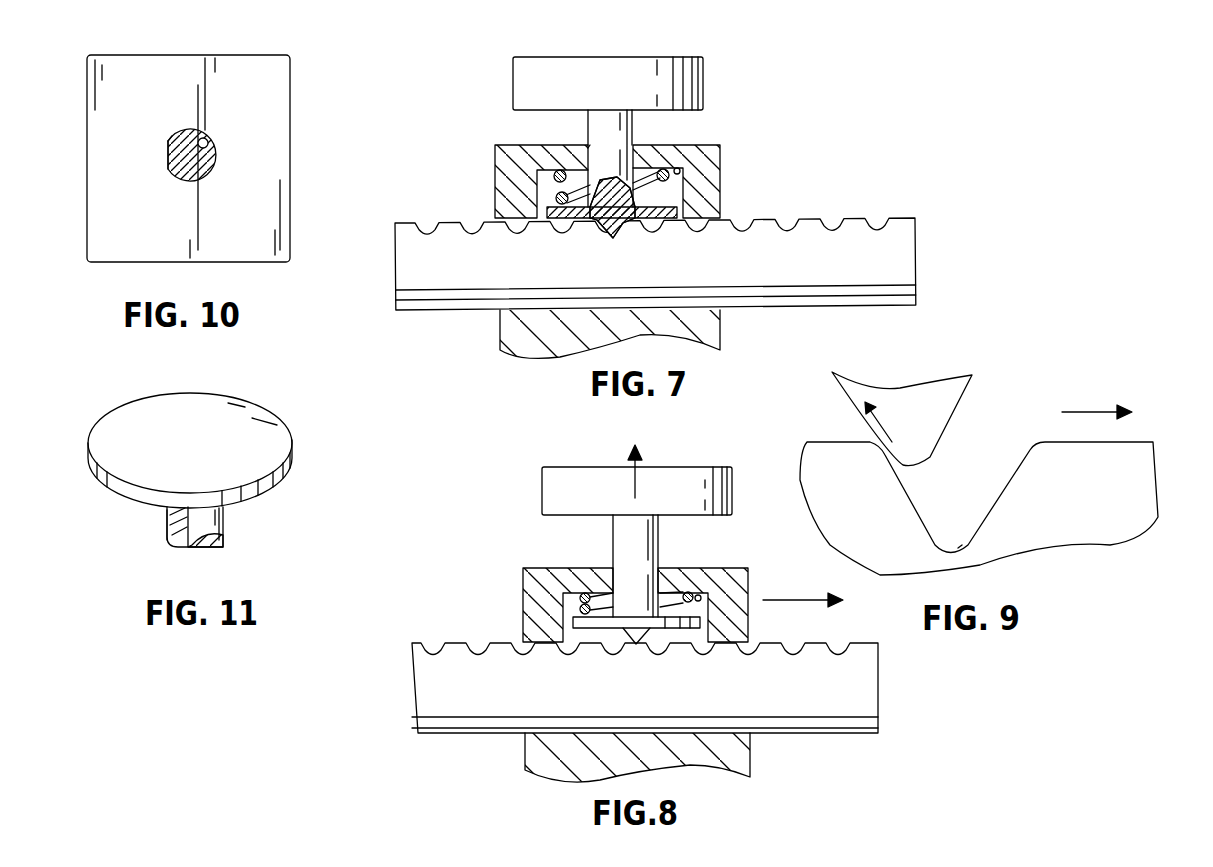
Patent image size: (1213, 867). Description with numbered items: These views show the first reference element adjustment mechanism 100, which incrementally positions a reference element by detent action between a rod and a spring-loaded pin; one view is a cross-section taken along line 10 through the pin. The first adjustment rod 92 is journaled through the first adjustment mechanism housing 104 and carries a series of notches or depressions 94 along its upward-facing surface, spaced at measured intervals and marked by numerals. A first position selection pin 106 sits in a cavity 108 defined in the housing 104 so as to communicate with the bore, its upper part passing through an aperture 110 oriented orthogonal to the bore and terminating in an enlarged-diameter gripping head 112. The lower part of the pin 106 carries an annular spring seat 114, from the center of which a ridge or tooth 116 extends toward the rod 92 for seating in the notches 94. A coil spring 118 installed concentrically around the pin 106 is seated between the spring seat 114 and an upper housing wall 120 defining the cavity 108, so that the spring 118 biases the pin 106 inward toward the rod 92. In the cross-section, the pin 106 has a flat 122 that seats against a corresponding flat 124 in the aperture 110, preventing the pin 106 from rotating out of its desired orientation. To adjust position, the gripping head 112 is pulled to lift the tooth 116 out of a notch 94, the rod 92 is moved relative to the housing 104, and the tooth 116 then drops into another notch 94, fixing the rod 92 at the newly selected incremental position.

In FIG. 7, the section view indicator 10 is at (503, 119).
In FIG. 7, the first adjustment rod 92 is at (450, 312).
In FIG. 8, the first adjustment rod 92 is at (645, 688).
In FIG. 9, the first adjustment rod 92 is at (1090, 506).
In FIG. 7, the notches or depressions 94 is at (430, 225).
In FIG. 9, the notches or depressions 94 is at (970, 545).
In FIG. 7, the first reference element adjustment mechanism 100 is at (758, 155).
In FIG. 8, the first reference element adjustment mechanism 100 is at (500, 551).
In FIG. 7, the first adjustment mechanism housing 104 is at (494, 180).
In FIG. 8, the first adjustment mechanism housing 104 is at (523, 592).
In FIG. 10, the first adjustment mechanism housing 104 is at (291, 148).
In FIG. 7, the first position selection pin 106 is at (632, 112).
In FIG. 8, the first position selection pin 106 is at (658, 527).
In FIG. 10, the first position selection pin 106 is at (205, 170).
In FIG. 11, the first position selection pin 106 is at (225, 522).
In FIG. 7, the cavity 108 is at (673, 186).
In FIG. 8, the cavity 108 is at (700, 605).
In FIG. 7, the aperture 110 is at (590, 145).
In FIG. 10, the aperture 110 is at (205, 145).
In FIG. 7, the gripping head 112 is at (628, 57).
In FIG. 8, the gripping head 112 is at (542, 489).
In FIG. 11, the gripping head 112 is at (293, 440).
In FIG. 7, the annular spring seat 114 is at (680, 212).
In FIG. 8, the annular spring seat 114 is at (700, 622).
In FIG. 7, the ridge or tooth 116 is at (613, 238).
In FIG. 8, the ridge or tooth 116 is at (622, 638).
In FIG. 9, the ridge or tooth 116 is at (940, 430).
In FIG. 7, the coil spring 118 is at (555, 173).
In FIG. 8, the coil spring 118 is at (585, 593).
In FIG. 7, the upper housing wall 120 is at (677, 173).
In FIG. 8, the upper housing wall 120 is at (710, 597).
In FIG. 10, the flat 122 is at (168, 158).
In FIG. 11, the flat 122 is at (170, 530).
In FIG. 10, the flat 124 is at (178, 136).